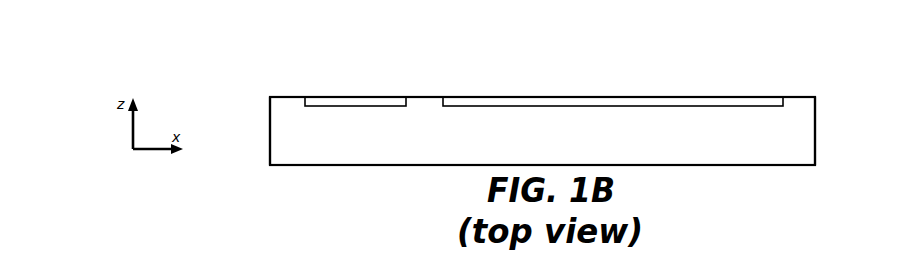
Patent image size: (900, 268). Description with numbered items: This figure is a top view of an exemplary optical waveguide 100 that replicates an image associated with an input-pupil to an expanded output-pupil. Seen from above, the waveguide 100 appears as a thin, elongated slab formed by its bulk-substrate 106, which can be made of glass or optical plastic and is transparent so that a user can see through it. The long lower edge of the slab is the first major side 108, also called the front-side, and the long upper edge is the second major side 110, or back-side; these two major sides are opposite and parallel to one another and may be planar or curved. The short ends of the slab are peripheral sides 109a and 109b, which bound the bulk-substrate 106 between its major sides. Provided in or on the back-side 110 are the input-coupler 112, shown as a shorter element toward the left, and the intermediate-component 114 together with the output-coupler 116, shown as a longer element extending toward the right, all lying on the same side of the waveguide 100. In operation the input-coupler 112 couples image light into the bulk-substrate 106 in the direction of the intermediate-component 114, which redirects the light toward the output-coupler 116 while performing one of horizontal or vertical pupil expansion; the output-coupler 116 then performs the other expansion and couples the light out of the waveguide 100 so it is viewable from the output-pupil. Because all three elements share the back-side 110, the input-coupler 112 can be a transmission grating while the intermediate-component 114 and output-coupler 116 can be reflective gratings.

The optical waveguide 100 is at (230, 84).
The bulk-substrate 106 is at (542, 131).
The first major side 108 is at (800, 165).
The peripheral side 109a is at (815, 125).
The peripheral side 109b is at (270, 127).
The second major side 110 is at (807, 97).
The input-coupler 112 is at (375, 96).
The intermediate-component 114 is at (613, 79).
The output-coupler 116 is at (613, 101).